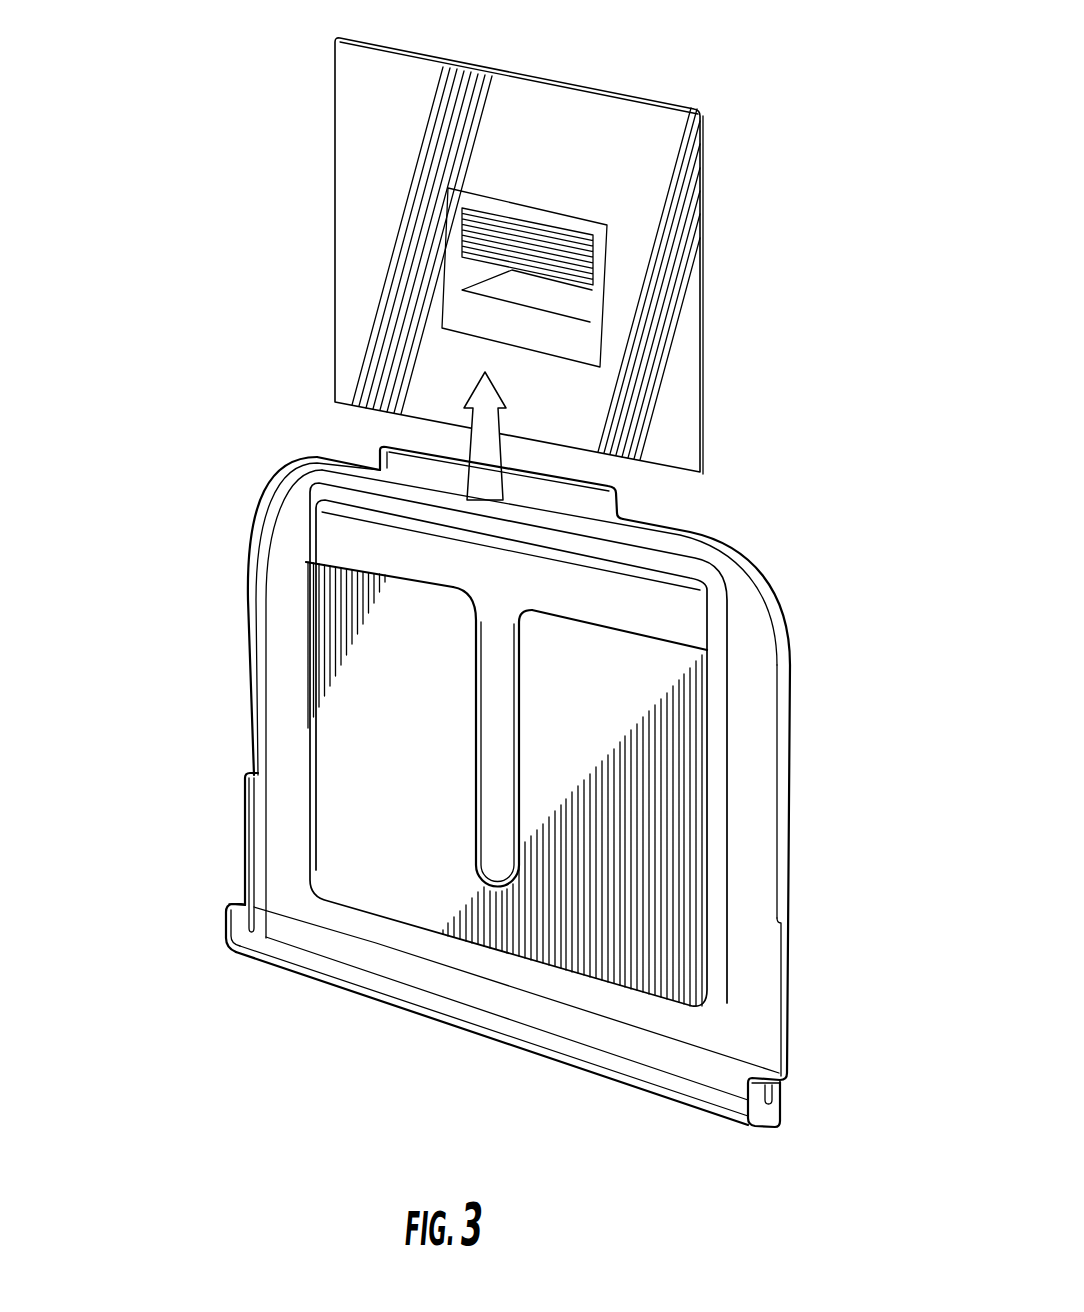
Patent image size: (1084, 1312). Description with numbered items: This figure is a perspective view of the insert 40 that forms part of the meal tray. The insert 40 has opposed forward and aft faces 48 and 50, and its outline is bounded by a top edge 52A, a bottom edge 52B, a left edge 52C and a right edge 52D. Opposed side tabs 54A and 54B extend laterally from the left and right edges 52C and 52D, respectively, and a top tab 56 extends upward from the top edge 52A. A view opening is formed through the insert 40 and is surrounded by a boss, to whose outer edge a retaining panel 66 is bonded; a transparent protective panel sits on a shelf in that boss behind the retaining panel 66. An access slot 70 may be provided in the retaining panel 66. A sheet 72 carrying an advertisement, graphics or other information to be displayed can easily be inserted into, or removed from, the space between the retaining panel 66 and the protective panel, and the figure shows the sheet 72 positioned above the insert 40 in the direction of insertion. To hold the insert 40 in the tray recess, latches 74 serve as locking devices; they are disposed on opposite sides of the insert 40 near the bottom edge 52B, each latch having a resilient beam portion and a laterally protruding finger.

The insert 40 is at (497, 817).
The forward face 48 is at (657, 1018).
The aft face 50 is at (497, 817).
The top edge 52A is at (527, 529).
The bottom edge 52B is at (430, 1018).
The left edge 52C is at (786, 884).
The right edge 52D is at (248, 586).
The side tab 54A is at (787, 967).
The side tab 54B is at (245, 793).
The top tab 56 is at (383, 447).
The retaining panel 66 is at (343, 826).
The access slot 70 is at (474, 623).
The sheet 72 is at (613, 118).
The latch 74 is at (235, 933).